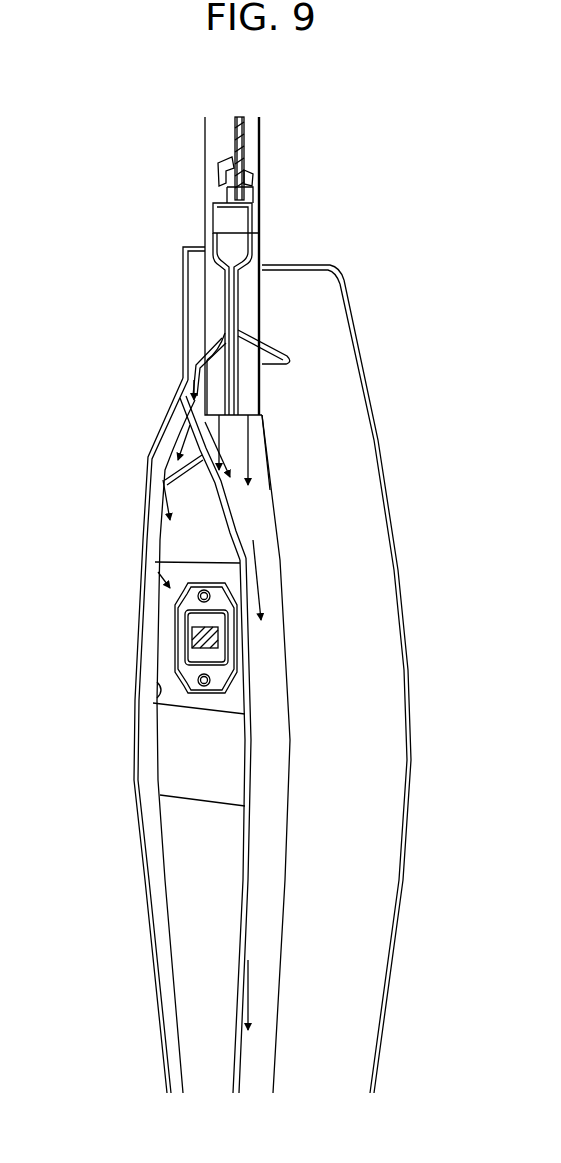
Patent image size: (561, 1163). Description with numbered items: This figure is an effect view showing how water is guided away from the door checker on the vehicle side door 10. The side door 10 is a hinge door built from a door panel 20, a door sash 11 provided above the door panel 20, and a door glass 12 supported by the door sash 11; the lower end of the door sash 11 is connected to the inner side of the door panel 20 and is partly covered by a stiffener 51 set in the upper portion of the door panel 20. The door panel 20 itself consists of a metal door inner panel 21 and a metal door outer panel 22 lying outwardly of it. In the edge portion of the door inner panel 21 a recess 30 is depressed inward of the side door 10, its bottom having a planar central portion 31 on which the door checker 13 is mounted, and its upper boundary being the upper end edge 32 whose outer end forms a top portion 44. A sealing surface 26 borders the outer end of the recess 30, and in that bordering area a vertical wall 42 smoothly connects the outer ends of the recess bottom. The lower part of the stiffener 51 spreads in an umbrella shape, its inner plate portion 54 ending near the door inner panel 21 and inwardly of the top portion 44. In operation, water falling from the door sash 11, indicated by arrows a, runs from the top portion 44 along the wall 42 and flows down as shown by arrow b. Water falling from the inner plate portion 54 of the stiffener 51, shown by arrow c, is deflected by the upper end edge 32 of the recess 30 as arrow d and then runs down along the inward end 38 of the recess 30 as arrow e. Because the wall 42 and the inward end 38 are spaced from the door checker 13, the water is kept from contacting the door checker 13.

The vehicle side door 10 is at (430, 235).
The door sash 11 is at (263, 386).
The door glass 12 is at (244, 142).
The door checker 13 is at (192, 637).
The door panel 20 is at (342, 282).
The door inner panel 21 is at (135, 738).
The door outer panel 22 is at (357, 335).
The sealing surface 26 is at (258, 510).
The recess 30 is at (153, 569).
The central portion 31 is at (160, 613).
The upper end edge 32 is at (163, 478).
The inward end 38 is at (150, 692).
The vertical wall 42 is at (256, 665).
The top portion 44 is at (198, 420).
The stiffener 51 is at (203, 291).
The inner plate portion 54 is at (222, 320).
The arrows a is at (220, 433).
The arrow b is at (256, 578).
The arrow c is at (205, 357).
The arrow d is at (188, 443).
The arrow e is at (165, 493).